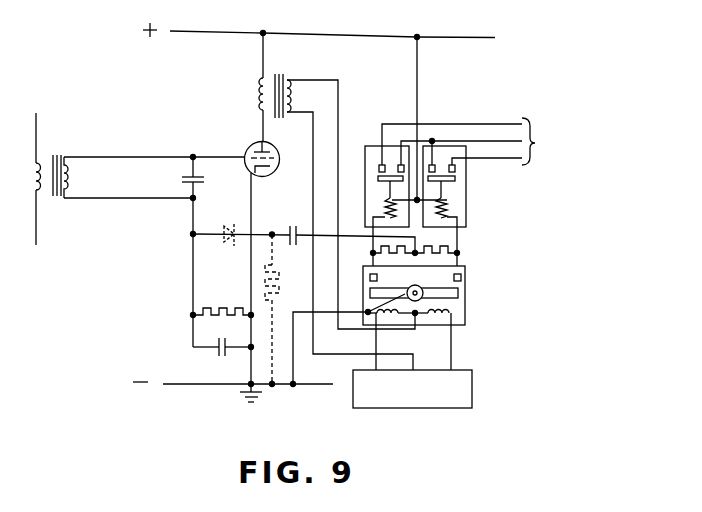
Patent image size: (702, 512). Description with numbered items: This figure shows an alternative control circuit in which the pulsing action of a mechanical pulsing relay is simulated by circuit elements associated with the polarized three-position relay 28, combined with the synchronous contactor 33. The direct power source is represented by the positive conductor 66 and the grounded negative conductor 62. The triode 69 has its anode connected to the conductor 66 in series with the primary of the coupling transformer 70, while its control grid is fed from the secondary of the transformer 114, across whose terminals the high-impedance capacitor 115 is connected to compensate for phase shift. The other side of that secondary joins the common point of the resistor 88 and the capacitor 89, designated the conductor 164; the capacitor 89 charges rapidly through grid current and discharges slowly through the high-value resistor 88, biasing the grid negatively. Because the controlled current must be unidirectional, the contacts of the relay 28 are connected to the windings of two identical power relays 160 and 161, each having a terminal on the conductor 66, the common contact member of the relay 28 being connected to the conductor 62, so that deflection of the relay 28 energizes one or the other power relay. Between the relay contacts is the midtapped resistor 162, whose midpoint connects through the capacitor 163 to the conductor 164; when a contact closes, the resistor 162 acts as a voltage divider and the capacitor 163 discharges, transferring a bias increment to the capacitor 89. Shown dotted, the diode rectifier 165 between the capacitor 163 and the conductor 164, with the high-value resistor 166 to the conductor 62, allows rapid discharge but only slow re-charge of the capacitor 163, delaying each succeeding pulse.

The positive conductor 66 is at (340, 33).
The coupling transformer 70 is at (262, 97).
The triode 69 is at (250, 146).
The transformer 114 is at (60, 150).
The high-impedance capacitor 115 is at (178, 178).
The conductor 164 is at (192, 218).
The diode rectifier 165 is at (231, 227).
The capacitor 163 is at (290, 228).
The high-value resistor 166 is at (278, 283).
The resistor 88 is at (221, 308).
The capacitor 89 is at (217, 350).
The ground conductor 62 is at (218, 385).
The power relay 160 is at (370, 143).
The power relay 161 is at (468, 208).
The midtapped resistor 162 is at (433, 247).
The polarized three-position relay 28 is at (468, 307).
The synchronous contactor 33 is at (475, 388).